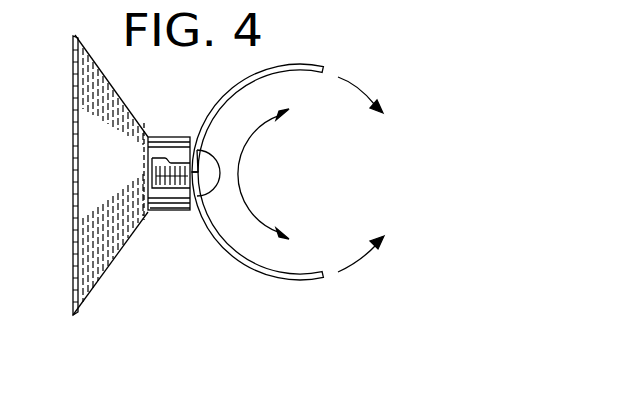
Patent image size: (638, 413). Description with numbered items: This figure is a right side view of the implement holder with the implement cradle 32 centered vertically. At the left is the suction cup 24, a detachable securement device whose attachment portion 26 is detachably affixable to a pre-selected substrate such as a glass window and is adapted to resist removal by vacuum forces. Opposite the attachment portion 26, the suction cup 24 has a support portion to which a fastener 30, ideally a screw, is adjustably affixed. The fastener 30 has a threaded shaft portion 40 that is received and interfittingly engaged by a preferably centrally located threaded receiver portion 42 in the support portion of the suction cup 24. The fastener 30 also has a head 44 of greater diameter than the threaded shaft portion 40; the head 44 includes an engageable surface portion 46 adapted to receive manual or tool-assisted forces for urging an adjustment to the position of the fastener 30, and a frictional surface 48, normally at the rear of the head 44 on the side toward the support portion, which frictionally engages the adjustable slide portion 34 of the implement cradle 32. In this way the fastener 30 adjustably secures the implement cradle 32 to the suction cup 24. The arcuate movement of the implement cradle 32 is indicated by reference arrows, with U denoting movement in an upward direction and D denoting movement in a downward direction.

The suction cup 24 is at (93, 293).
The attachment portion 26 is at (180, 208).
The fastener 30 is at (211, 188).
The implement cradle 32 is at (281, 68).
The adjustable slide portion 34 is at (203, 210).
The threaded shaft portion 40 is at (178, 168).
The threaded receiver portion 42 is at (150, 158).
The head 44 is at (207, 151).
The engageable surface portion 46 is at (209, 176).
The frictional surface 48 is at (177, 190).
The upward direction reference arrow U is at (356, 84).
The downward direction reference arrow D is at (356, 263).